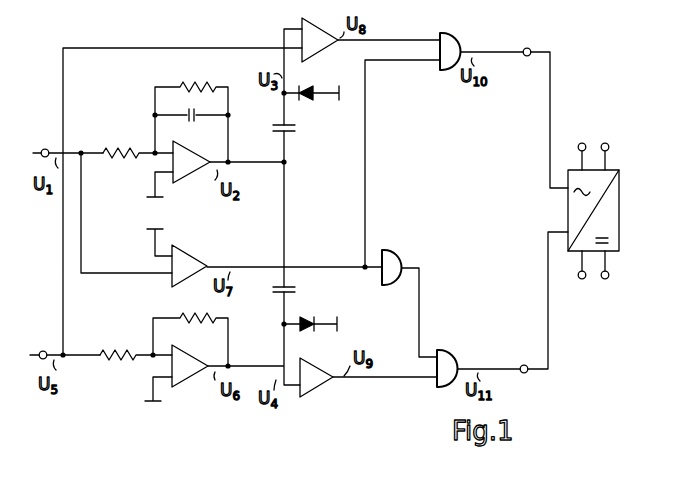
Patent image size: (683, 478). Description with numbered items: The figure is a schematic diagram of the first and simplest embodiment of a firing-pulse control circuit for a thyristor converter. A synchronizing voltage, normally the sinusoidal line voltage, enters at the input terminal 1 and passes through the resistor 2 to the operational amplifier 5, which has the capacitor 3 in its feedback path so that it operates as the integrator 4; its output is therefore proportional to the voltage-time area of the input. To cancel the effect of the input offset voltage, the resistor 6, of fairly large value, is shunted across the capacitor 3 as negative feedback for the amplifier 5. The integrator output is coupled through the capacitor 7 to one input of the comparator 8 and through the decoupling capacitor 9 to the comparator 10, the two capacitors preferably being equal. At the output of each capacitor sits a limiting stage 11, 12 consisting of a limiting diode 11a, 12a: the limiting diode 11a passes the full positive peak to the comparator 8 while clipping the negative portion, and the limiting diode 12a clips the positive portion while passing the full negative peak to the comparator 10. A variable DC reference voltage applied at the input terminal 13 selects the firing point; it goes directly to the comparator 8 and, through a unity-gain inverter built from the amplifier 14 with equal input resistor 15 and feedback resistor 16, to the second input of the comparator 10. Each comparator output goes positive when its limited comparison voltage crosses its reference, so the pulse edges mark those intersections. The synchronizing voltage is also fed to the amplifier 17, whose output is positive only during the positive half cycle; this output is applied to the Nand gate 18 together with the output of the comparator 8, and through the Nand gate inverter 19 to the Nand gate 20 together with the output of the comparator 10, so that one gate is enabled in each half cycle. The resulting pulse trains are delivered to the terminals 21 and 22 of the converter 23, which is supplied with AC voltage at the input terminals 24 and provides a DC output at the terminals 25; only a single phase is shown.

The input terminal 1 is at (60, 154).
The resistor 2 is at (120, 150).
The capacitor 3 is at (186, 113).
The integrator 4 is at (215, 148).
The operational amplifier 5 is at (183, 178).
The resistor 6 is at (197, 82).
The capacitor 7 is at (290, 134).
The comparator 8 is at (313, 24).
The decoupling capacitor 9 is at (289, 283).
The comparator 10 is at (312, 390).
The limiting stage 11 is at (325, 128).
The limiting diode 11a is at (318, 86).
The limiting stage 12 is at (329, 308).
The limiting diode 12a is at (305, 333).
The input terminal 13 is at (54, 356).
The amplifier 14 is at (183, 384).
The input resistor 15 is at (117, 353).
The feedback resistor 16 is at (184, 314).
The amplifier 17 is at (183, 252).
The Nand gate 18 is at (450, 34).
The Nand gate inverter 19 is at (389, 248).
The Nand gate 20 is at (448, 350).
The terminal 21 is at (527, 47).
The terminal 22 is at (522, 375).
The converter 23 is at (607, 208).
The input terminals 24 is at (599, 146).
The terminals 25 is at (608, 277).